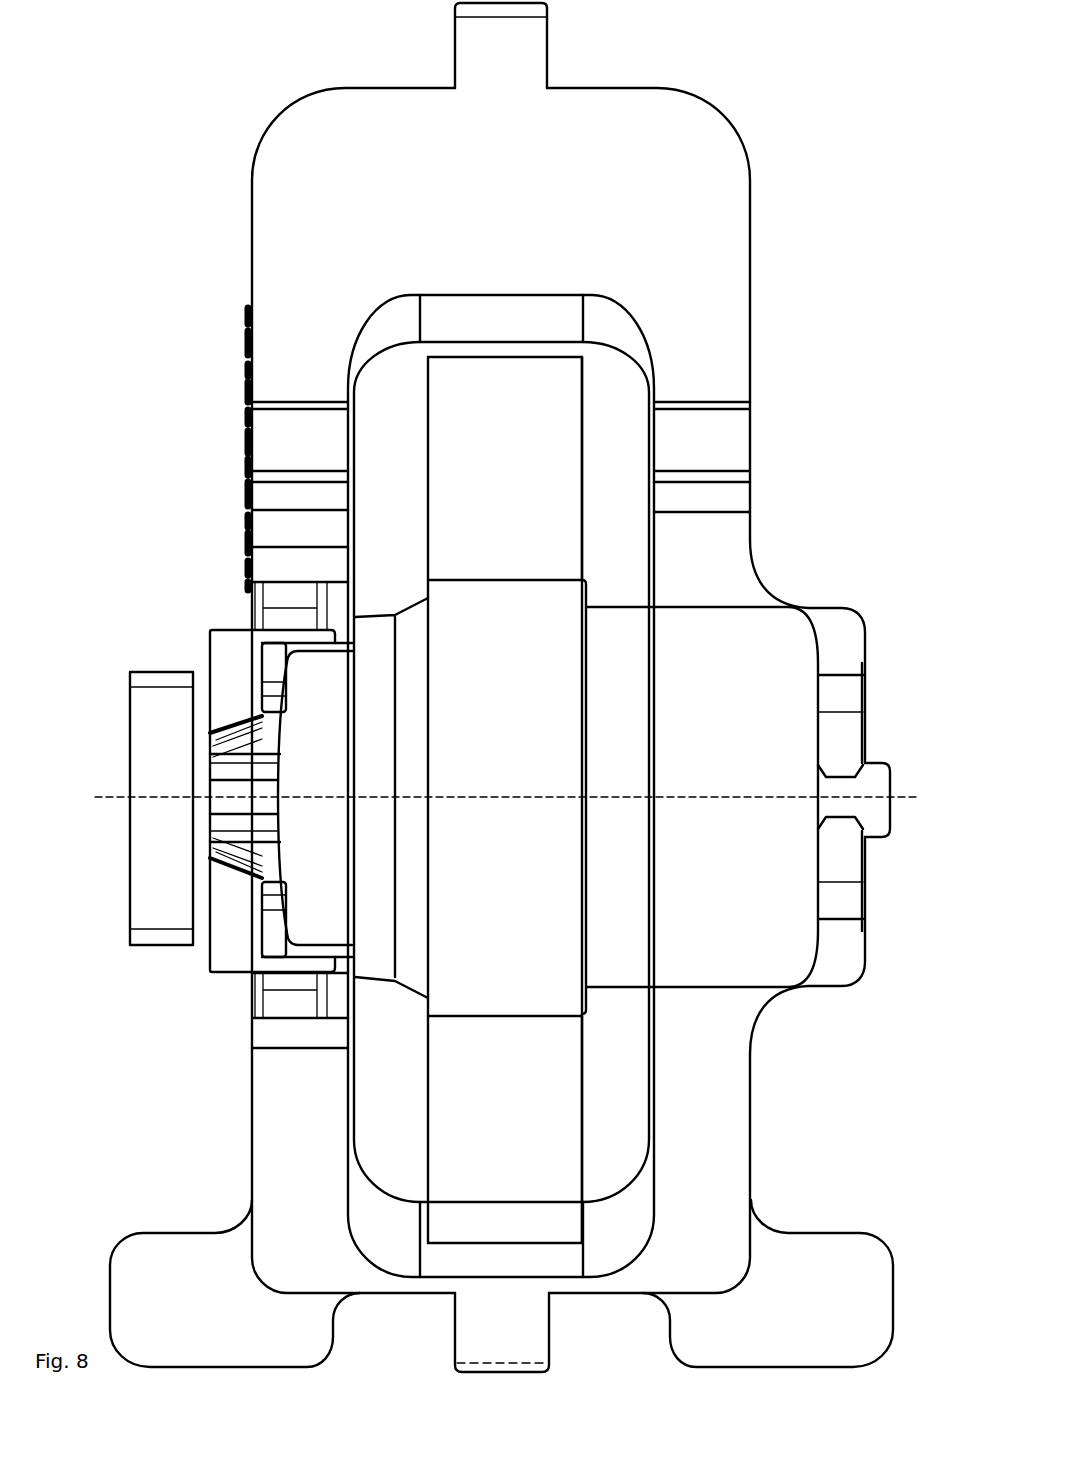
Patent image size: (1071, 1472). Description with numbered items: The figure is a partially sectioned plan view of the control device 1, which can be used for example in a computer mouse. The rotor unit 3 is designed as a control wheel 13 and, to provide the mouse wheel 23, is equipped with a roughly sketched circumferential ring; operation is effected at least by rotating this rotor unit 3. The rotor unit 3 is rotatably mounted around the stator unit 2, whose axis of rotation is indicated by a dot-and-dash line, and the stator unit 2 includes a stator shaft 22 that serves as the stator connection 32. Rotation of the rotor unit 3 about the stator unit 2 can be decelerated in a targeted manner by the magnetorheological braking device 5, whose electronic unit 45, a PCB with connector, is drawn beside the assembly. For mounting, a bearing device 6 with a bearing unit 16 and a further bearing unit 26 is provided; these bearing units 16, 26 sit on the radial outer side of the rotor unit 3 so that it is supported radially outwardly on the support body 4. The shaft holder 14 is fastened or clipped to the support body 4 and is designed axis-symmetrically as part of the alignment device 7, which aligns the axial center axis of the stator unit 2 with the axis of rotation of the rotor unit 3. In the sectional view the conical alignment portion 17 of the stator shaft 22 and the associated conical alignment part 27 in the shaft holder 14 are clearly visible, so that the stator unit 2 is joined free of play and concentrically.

The control device 1 is at (92, 49).
The stator unit 2 is at (409, 591).
The rotor unit 3 is at (796, 634).
The support body 4 is at (272, 231).
The braking device 5 is at (798, 556).
The bearing device 6 is at (107, 983).
The alignment device 7 is at (92, 567).
The control wheel 13 is at (666, 765).
The mouse wheel 23 is at (583, 408).
The shaft holder 14 is at (235, 720).
The bearing unit 16 is at (280, 937).
The conical alignment portion 17 is at (208, 637).
The stator shaft 22 is at (273, 738).
The further bearing unit 26 is at (843, 826).
The conical alignment part 27 is at (220, 871).
The stator connection 32 is at (242, 893).
The electronic unit 45 is at (118, 826).